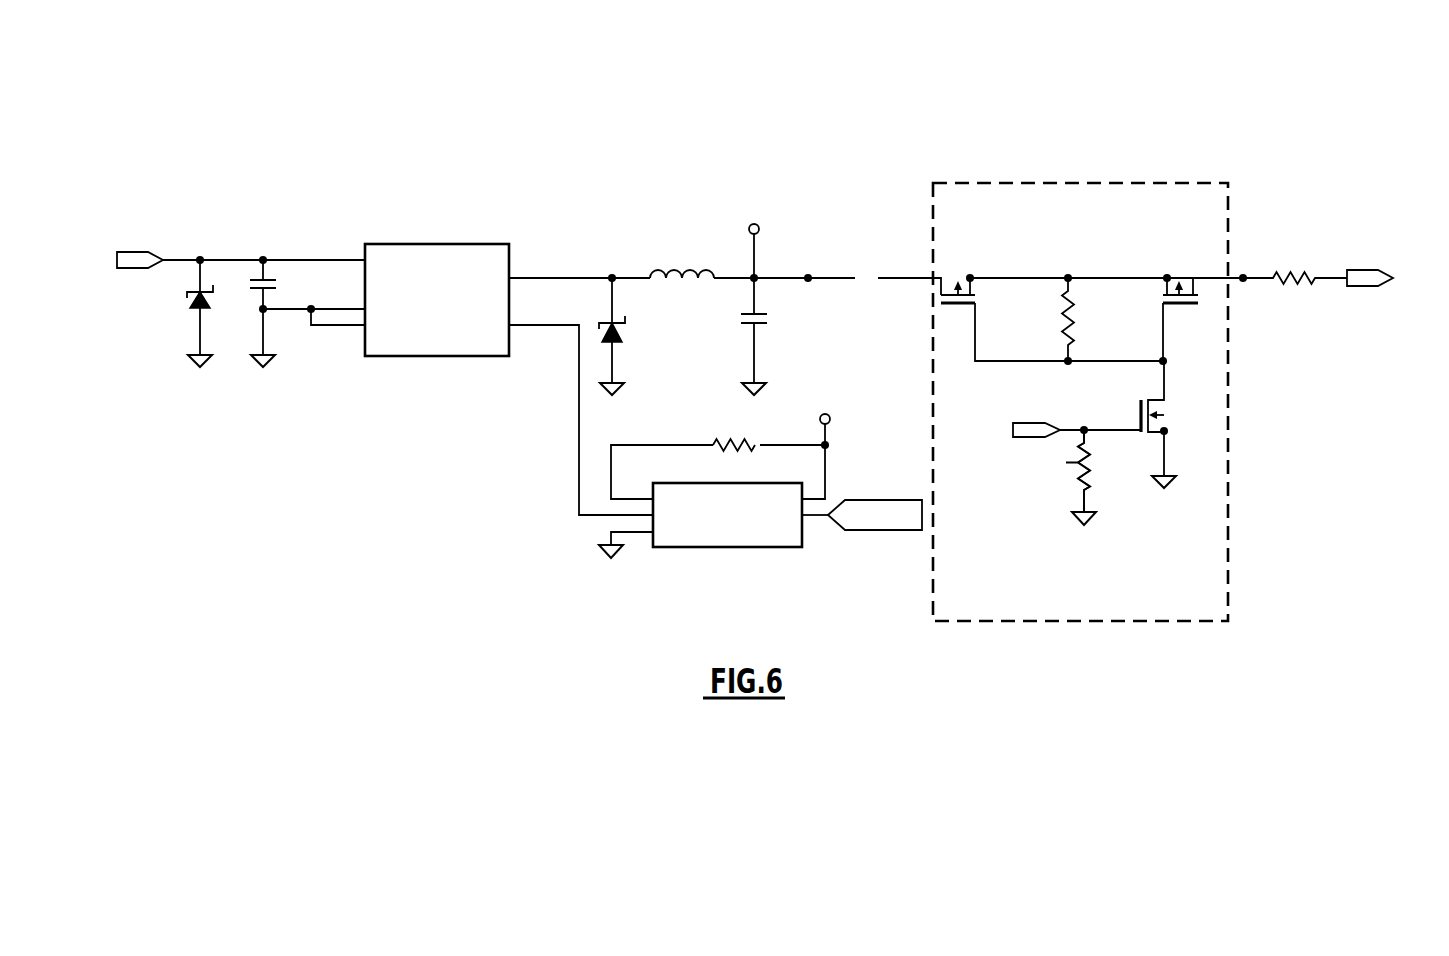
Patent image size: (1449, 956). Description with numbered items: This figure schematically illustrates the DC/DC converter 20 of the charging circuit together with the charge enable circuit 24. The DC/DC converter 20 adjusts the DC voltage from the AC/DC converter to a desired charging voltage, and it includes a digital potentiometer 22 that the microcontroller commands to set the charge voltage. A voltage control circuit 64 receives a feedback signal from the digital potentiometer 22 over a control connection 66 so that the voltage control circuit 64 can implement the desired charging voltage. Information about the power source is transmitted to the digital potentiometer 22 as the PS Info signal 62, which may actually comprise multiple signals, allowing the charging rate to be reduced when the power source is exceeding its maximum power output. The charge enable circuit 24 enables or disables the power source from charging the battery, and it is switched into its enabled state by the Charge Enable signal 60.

The DC/DC converter 20 is at (189, 121).
The digital potentiometer 22 is at (730, 548).
The charge enable circuit 24 is at (1143, 622).
The Charge Enable signal 60 is at (1025, 438).
The PS Info signal 62 is at (877, 531).
The voltage control circuit 64 is at (422, 357).
The control line 66 is at (578, 452).